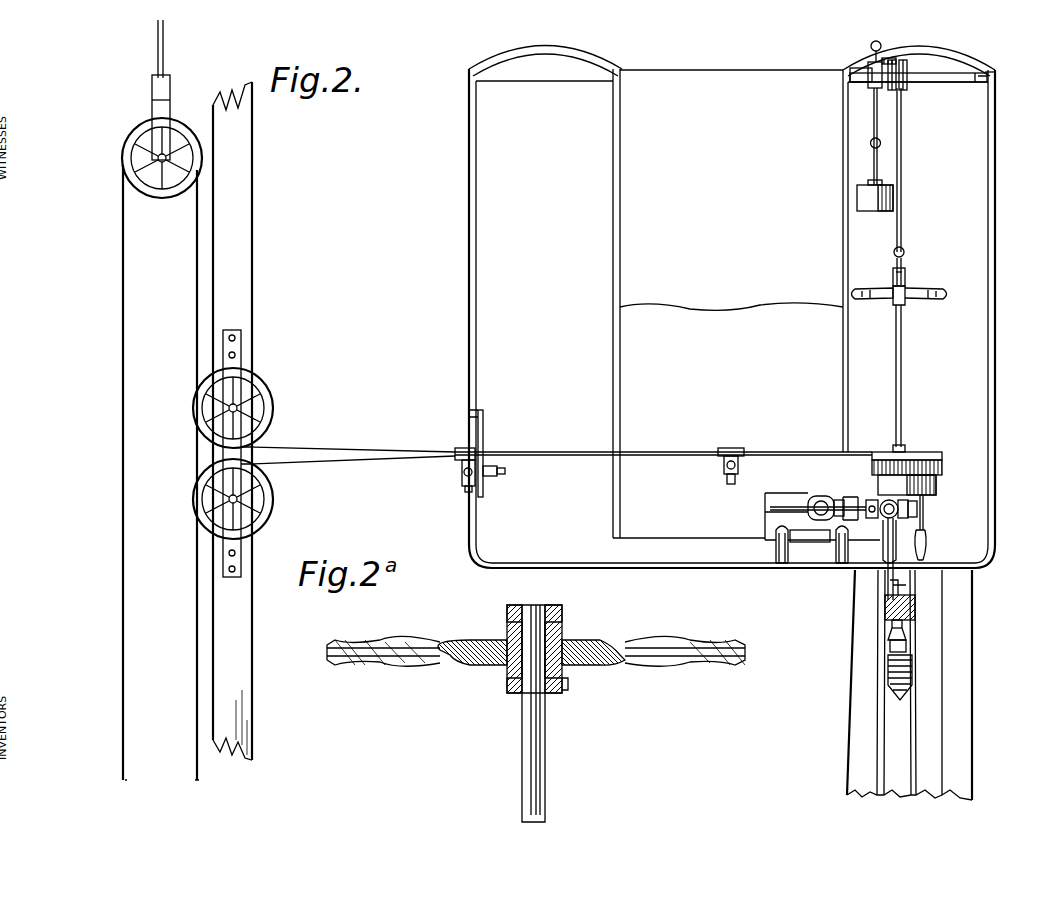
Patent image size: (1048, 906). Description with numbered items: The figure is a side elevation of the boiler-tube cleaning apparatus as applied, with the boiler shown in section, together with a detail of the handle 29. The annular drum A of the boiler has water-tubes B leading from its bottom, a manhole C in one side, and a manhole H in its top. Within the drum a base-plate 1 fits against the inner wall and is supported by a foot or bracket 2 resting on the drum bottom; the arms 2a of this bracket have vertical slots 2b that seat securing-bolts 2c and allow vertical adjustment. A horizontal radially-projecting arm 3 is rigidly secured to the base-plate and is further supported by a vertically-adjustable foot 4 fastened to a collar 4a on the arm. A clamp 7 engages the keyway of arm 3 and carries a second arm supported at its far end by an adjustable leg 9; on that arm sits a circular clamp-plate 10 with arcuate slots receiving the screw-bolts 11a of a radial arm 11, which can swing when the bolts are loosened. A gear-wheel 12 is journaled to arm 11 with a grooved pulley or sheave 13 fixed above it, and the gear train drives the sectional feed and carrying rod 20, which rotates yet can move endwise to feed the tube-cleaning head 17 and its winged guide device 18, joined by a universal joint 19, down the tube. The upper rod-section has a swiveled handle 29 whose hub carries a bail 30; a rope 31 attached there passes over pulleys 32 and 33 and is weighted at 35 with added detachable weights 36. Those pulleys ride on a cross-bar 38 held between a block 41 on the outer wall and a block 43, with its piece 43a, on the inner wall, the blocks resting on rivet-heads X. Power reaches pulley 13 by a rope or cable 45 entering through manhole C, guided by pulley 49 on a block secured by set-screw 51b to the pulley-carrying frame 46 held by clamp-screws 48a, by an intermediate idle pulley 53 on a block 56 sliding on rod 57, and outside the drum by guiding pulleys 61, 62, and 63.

In FIG. 2, the annular drum A is at (468, 222).
In FIG. 2, the water-tubes B is at (860, 695).
In FIG. 2, the manhole C is at (483, 430).
In FIG. 2, the manhole H is at (884, 50).
In FIG. 2, the rivet-heads X is at (843, 82).
In FIG. 2, the base-plate 1 is at (790, 480).
In FIG. 2, the foot or bracket 2 is at (808, 568).
In FIG. 2, the arms 2a is at (835, 548).
In FIG. 2, the vertical slots 2b is at (843, 568).
In FIG. 2, the securing-bolts 2c is at (851, 485).
In FIG. 2, the horizontal radially-projecting arm 3 is at (830, 500).
In FIG. 2, the vertically-adjustable foot 4 is at (884, 550).
In FIG. 2, the collar 4a is at (872, 518).
In FIG. 2, the clamp 7 is at (850, 497).
In FIG. 2, the adjustable leg 9 is at (928, 550).
In FIG. 2, the clamp-plate 10 is at (915, 505).
In FIG. 2, the radial arm 11 is at (936, 483).
In FIG. 2, the screw-bolts 11a is at (924, 500).
In FIG. 2, the gear-wheel 12 is at (942, 468).
In FIG. 2, the grooved pulley or sheave 13 is at (942, 452).
In FIG. 2, the boiler-tube-cleaning head 17 is at (925, 660).
In FIG. 2, the winged guide device 18 is at (925, 598).
In FIG. 2, the universal joint 19 is at (888, 638).
In FIG. 2, the sectional feed and carrying rod 20 is at (904, 398).
In FIG. 2A, the sectional feed and carrying rod 20 is at (530, 724).
In FIG. 2, the swiveled handle 29 is at (920, 295).
In FIG. 2A, the swiveled handle 29 is at (580, 635).
In FIG. 2, the bail or loop 30 is at (905, 270).
In FIG. 2, the rope 31 is at (905, 170).
In FIG. 2, the pulley 32 is at (907, 85).
In FIG. 2, the pulley 33 is at (896, 60).
In FIG. 2, the weight 35 is at (857, 198).
In FIG. 2, the detachable weights 36 is at (868, 180).
In FIG. 2, the cross-bar 38 is at (957, 82).
In FIG. 2, the block or plate 41 is at (990, 65).
In FIG. 2, the block or plate 43 is at (853, 68).
In FIG. 2, the piece 43a is at (868, 85).
In FIG. 2, the rope, belt, or cable 45 is at (648, 436).
In FIG. 2, the pulley-carrying frame or shaft 46 is at (462, 472).
In FIG. 2, the clamp-screws 48a is at (500, 476).
In FIG. 2, the idle pulley 49 is at (455, 462).
In FIG. 2, the set-screw 51b is at (466, 492).
In FIG. 2, the intermediate idle pulley 53 is at (720, 458).
In FIG. 2, the block 56 is at (729, 484).
In FIG. 2, the rod 57 is at (748, 462).
In FIG. 2, the guiding pulley 61 is at (268, 488).
In FIG. 2, the guiding pulley 62 is at (268, 396).
In FIG. 2, the guiding pulley 63 is at (163, 200).